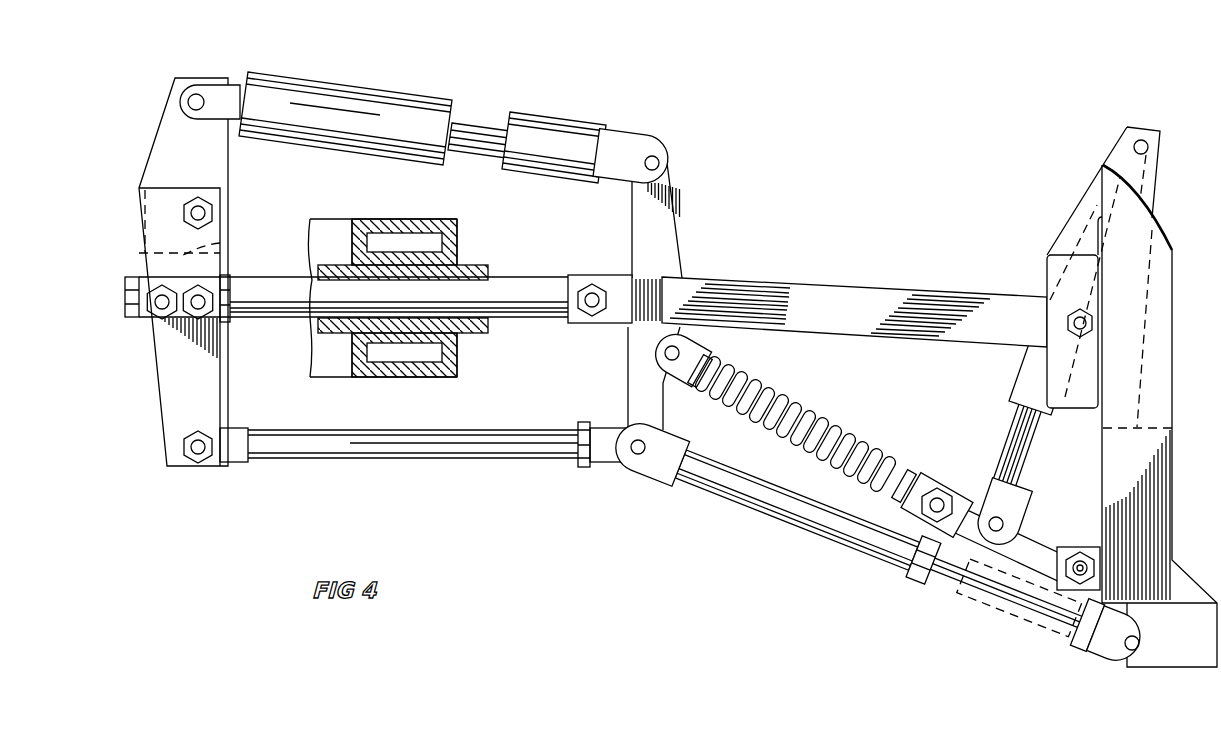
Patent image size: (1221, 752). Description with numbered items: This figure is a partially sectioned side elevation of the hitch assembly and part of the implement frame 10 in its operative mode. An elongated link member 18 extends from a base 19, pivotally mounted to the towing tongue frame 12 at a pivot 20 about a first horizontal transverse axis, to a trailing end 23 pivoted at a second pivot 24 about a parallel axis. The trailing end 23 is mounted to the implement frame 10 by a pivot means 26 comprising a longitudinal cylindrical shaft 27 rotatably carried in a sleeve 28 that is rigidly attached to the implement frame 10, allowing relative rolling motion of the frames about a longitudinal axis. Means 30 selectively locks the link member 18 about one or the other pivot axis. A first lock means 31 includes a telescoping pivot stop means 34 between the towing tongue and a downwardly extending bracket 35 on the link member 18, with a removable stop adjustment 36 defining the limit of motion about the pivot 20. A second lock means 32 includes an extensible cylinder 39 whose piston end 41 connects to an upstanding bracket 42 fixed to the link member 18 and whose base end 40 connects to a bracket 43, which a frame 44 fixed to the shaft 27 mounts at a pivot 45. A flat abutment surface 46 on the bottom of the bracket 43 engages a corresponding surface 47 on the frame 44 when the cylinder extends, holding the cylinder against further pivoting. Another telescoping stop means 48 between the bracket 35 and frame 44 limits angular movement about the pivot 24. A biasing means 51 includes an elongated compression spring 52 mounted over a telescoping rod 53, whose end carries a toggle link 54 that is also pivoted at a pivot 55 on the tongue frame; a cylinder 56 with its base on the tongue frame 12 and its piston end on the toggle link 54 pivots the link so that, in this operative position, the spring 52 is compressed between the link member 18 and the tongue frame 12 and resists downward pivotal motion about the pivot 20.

The implement frame 10 is at (459, 374).
The towing tongue frame 12 is at (1170, 452).
The link member 18 is at (829, 282).
The base 19 is at (1025, 300).
The pivot 20 is at (1072, 322).
The trailing end 23 is at (602, 275).
The pivot 24 is at (588, 312).
The pivot means 26 is at (442, 296).
The cylindrical shaft 27 is at (522, 282).
The sleeve 28 is at (468, 268).
The means for interconnecting 30 is at (680, 143).
The first lock means 31 is at (815, 531).
The second lock means 32 is at (422, 112).
The telescoping pivot stop means 34 is at (770, 463).
The bracket 35 is at (632, 388).
The stop adjustment 36 is at (1028, 632).
The extensible cylinder 39 is at (347, 87).
The base end 40 is at (216, 100).
The piston end 41 is at (645, 150).
The upstanding bracket 42 is at (664, 200).
The bracket 43 is at (215, 163).
The frame 44 is at (205, 367).
The pivot 45 is at (207, 213).
The abutment surface 46 is at (139, 254).
The surface 47 is at (220, 243).
The telescoping stop means 48 is at (444, 461).
The biasing means 51 is at (953, 476).
The compression spring 52 is at (832, 393).
The telescoping rod 53 is at (897, 483).
The toggle link 54 is at (1031, 526).
The pivot 55 is at (1062, 573).
The cylinder 56 is at (1021, 378).